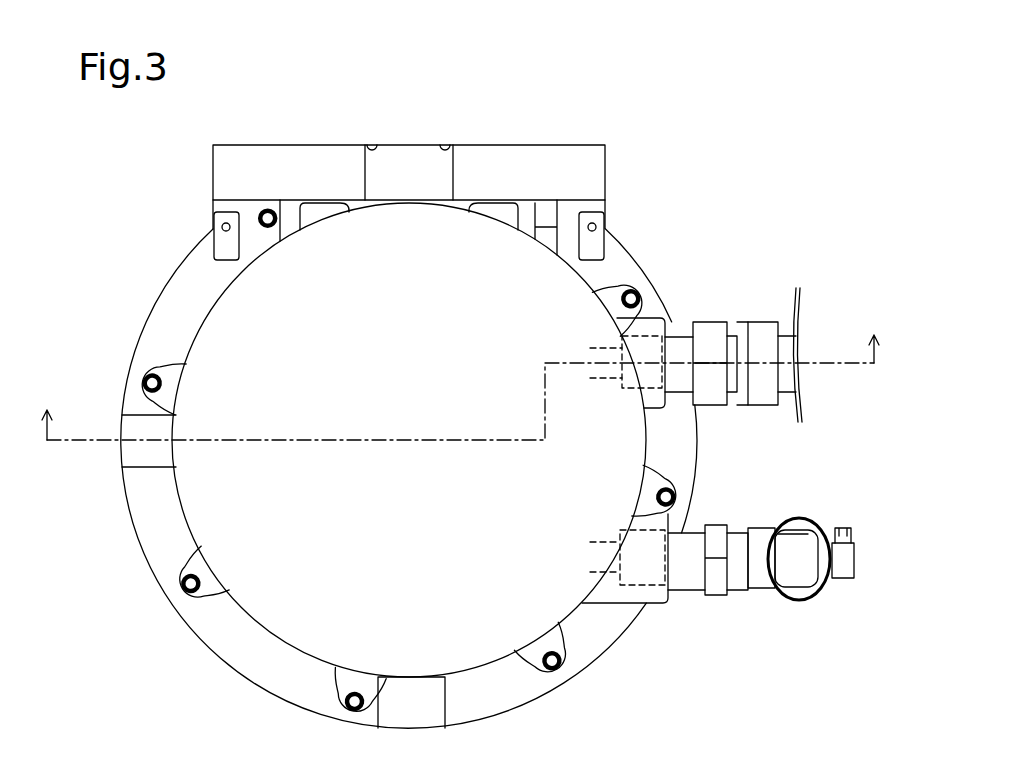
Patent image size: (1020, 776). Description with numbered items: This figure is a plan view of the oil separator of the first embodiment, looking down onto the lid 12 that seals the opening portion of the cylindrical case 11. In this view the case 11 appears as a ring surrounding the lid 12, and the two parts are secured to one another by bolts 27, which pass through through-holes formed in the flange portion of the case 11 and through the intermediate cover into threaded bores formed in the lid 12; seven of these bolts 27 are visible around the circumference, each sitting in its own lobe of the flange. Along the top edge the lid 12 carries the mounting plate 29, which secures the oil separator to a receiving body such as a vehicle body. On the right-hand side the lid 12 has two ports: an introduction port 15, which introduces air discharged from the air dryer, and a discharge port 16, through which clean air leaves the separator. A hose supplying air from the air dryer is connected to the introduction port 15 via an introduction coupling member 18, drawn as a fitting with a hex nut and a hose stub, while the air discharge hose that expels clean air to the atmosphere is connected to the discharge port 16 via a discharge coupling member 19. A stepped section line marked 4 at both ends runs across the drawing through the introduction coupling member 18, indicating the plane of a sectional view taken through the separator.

The case 11 is at (147, 318).
The lid 12 is at (208, 318).
The introduction port 15 is at (664, 352).
The discharge port 16 is at (660, 585).
The introduction coupling member 18 is at (752, 322).
The discharge coupling member 19 is at (800, 521).
The bolts 27 is at (269, 228).
The mounting plate 29 is at (612, 178).
The section line 4- 4 is at (460, 371).